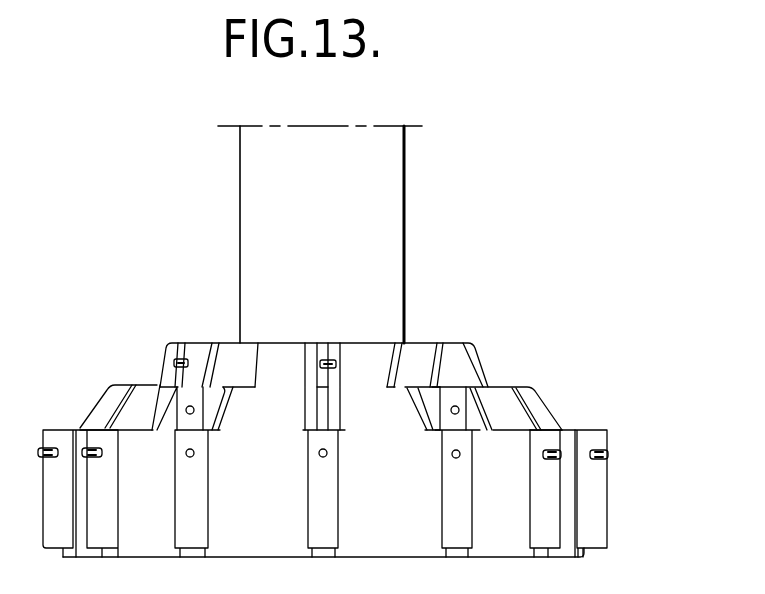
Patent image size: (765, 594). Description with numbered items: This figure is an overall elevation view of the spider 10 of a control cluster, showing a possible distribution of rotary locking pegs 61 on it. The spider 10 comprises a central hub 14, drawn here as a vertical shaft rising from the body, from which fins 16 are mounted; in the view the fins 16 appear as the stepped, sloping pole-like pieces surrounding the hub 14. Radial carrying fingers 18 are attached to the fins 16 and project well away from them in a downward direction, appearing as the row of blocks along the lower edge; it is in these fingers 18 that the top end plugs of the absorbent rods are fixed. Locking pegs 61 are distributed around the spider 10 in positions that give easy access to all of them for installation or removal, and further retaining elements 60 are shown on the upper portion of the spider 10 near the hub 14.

The spider 10 is at (413, 260).
The hub 14 is at (353, 191).
The fins 16 is at (399, 411).
The radial carrying fingers 18 is at (553, 482).
The retaining clips 60 is at (333, 367).
The locking pegs 61 is at (605, 450).